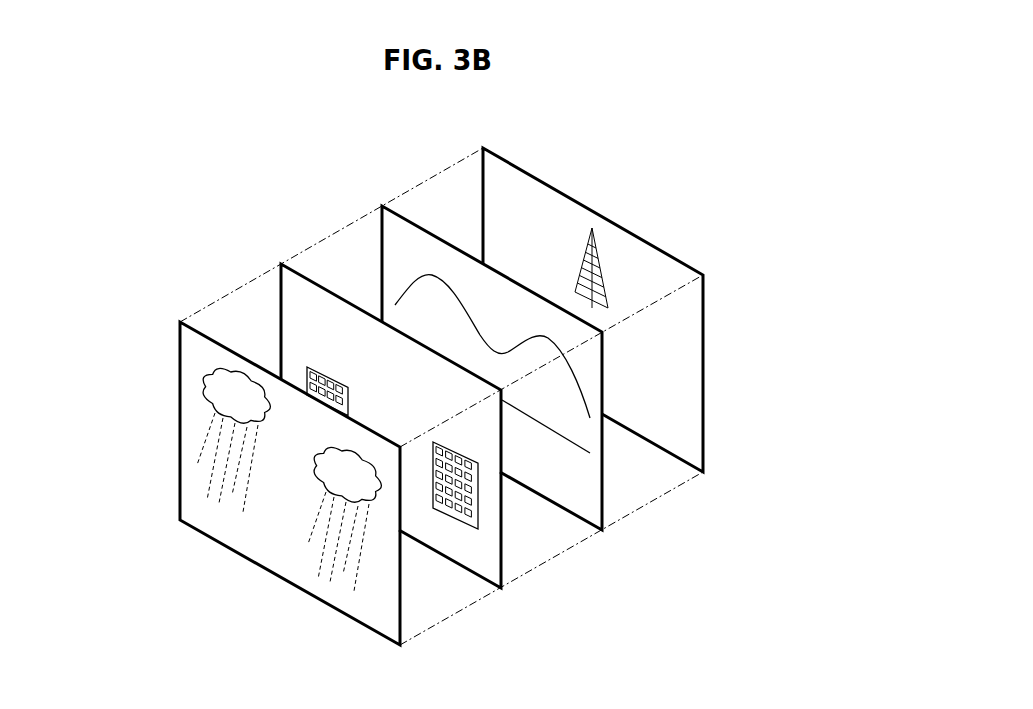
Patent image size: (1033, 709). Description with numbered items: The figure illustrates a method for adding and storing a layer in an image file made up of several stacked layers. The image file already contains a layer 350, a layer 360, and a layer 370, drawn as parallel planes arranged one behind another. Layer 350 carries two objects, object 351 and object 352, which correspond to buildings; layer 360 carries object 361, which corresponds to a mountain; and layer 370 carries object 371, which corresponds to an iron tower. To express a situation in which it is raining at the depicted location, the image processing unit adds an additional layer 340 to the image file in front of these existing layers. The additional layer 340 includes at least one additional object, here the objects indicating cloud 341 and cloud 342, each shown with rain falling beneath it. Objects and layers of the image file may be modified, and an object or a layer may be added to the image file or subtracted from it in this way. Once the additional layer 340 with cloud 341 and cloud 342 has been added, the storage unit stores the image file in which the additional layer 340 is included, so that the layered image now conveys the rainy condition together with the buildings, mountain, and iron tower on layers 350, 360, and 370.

The additional layer 340 is at (180, 322).
The cloud 341 is at (208, 375).
The cloud 342 is at (378, 493).
The layer 350 is at (281, 264).
The object 351 is at (328, 380).
The object 352 is at (478, 500).
The layer 360 is at (382, 206).
The object 361 is at (603, 382).
The layer 370 is at (483, 148).
The object 371 is at (598, 278).